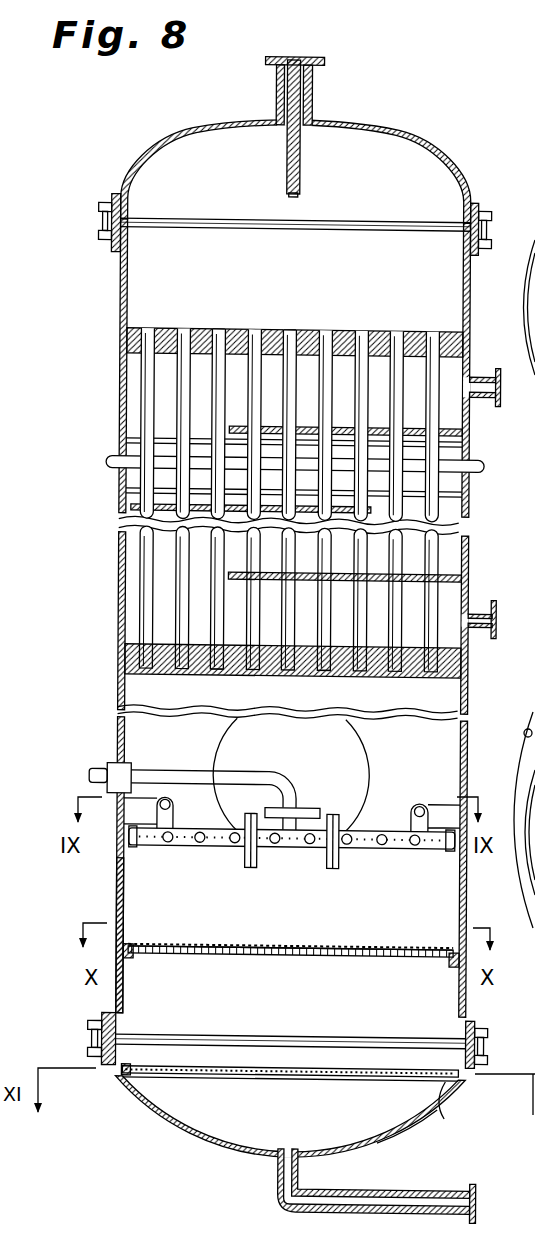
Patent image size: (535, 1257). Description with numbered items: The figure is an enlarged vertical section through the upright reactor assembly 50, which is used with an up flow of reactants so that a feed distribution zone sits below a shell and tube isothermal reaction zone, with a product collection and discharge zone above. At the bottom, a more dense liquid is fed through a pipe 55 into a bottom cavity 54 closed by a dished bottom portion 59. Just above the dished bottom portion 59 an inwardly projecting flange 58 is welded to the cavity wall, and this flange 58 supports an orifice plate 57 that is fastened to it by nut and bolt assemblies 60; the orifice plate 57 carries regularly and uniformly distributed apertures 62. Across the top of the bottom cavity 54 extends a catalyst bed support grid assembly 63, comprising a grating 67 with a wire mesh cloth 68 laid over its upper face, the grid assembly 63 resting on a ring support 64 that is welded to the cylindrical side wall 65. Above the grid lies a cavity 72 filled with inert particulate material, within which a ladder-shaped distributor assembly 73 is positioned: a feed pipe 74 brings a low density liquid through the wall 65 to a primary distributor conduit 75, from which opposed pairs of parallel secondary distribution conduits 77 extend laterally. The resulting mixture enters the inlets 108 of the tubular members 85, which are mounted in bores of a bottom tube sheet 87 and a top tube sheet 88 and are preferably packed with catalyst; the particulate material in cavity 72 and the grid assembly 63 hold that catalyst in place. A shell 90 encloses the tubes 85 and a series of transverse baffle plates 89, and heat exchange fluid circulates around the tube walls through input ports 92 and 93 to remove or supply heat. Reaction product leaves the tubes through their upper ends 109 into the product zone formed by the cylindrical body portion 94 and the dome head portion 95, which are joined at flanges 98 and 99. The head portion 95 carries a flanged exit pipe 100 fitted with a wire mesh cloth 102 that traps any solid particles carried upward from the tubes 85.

The assembly 50 is at (403, 128).
The bottom cavity 54 is at (175, 1110).
The pipe 55 is at (280, 1190).
The orifice plate 57 is at (388, 1080).
The flange 58 is at (443, 1103).
The dished bottom portion 59 is at (402, 1138).
The nut and bolt assemblies 60 is at (118, 1087).
The apertures 62 is at (290, 1078).
The catalyst bed support grid assembly 63 is at (189, 956).
The ring support 64 is at (453, 966).
The cylindrical side wall 65 is at (118, 893).
The grating 67 is at (258, 957).
The wire mesh cloth 68 is at (307, 942).
The cavity 72 is at (140, 738).
The distributor assembly 73 is at (405, 850).
The feed pipe 74 is at (290, 781).
The primary distributor conduit 75 is at (293, 847).
The secondary distribution conduits 77 is at (385, 850).
The tubular members 85 is at (408, 417).
The bottom tube sheet 87 is at (466, 661).
The top tube sheet 88 is at (462, 340).
The baffle plates 89 is at (353, 428).
The shell 90 is at (118, 578).
The heat exchange fluid input port 92 is at (498, 392).
The heat exchange fluid input port 93 is at (492, 619).
The cylindrical body portion 94 is at (118, 295).
The dome head portion 95 is at (206, 130).
The flange 98 is at (95, 235).
The flange 99 is at (114, 200).
The flanged exit pipe 100 is at (310, 93).
The wire mesh cloth 102 is at (287, 187).
The tube inlet 108 is at (227, 678).
The tube upper ends 109 is at (296, 333).